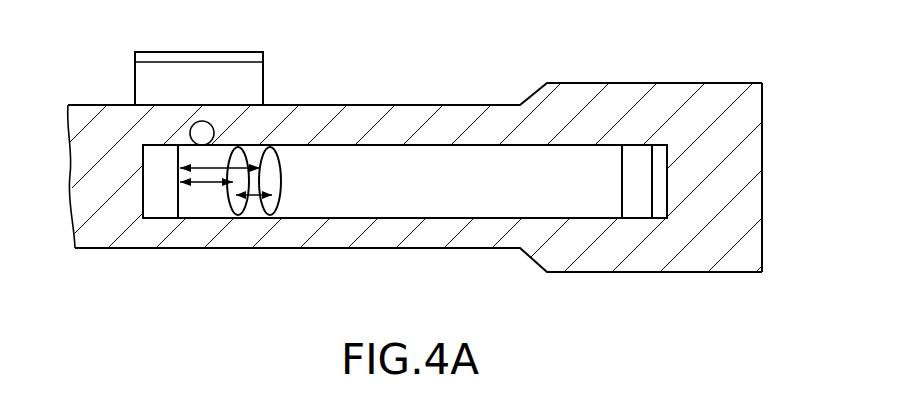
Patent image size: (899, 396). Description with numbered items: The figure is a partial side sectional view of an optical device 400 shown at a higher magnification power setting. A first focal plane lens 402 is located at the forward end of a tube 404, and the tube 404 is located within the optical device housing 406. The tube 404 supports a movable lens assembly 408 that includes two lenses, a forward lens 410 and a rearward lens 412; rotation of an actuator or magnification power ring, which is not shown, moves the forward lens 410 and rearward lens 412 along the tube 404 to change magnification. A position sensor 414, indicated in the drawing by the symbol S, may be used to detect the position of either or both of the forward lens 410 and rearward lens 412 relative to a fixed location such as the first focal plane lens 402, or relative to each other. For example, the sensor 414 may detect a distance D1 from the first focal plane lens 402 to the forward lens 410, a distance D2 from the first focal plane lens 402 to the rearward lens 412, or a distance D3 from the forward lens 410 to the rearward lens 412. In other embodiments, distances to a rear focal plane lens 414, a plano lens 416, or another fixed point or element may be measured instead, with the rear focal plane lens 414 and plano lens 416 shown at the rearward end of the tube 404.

The optical device 400 is at (128, 282).
The first focal plane lens 402 is at (145, 185).
The tube 404 is at (496, 158).
The optical device housing 406 is at (638, 257).
The movable lens assembly 408 is at (250, 160).
The forward lens 410 is at (233, 206).
The rearward lens 412 is at (276, 206).
The position sensor 414 is at (191, 129).
The plano lens 416 is at (662, 172).
The distance from front focal plane lens to forward lens D1 is at (198, 186).
The distance from front focal plane lens to rearward lens D2 is at (223, 166).
The distance from forward lens to rearward lens D3 is at (258, 198).
The sensor S is at (202, 133).